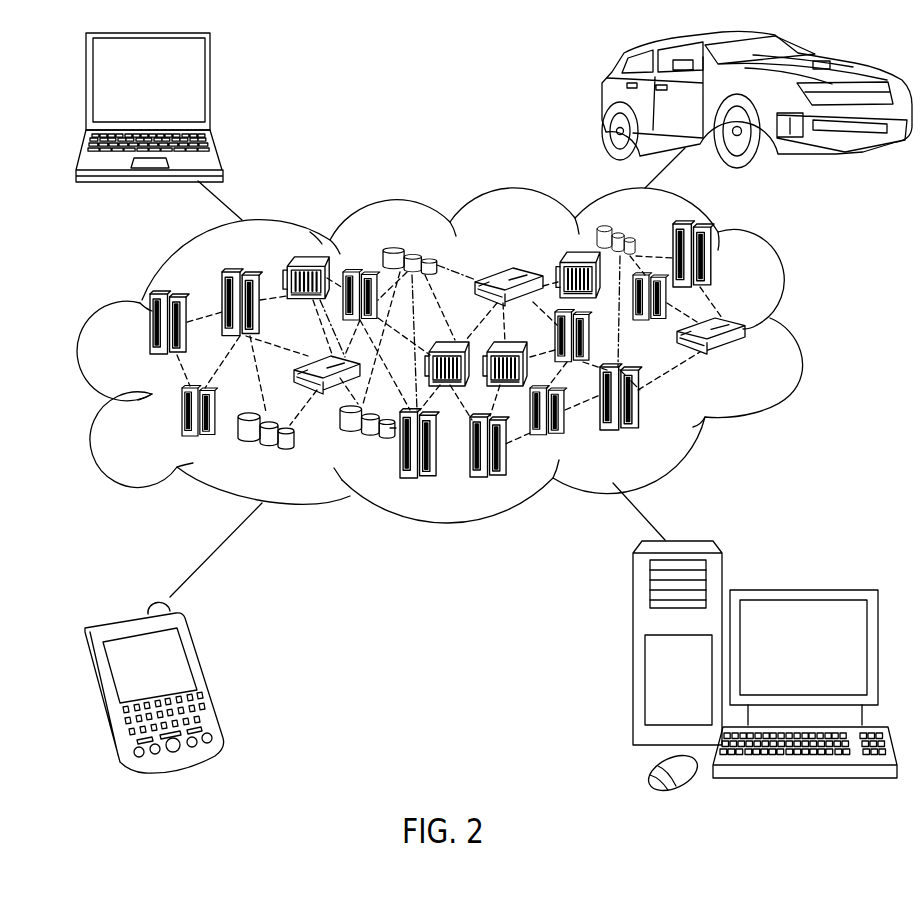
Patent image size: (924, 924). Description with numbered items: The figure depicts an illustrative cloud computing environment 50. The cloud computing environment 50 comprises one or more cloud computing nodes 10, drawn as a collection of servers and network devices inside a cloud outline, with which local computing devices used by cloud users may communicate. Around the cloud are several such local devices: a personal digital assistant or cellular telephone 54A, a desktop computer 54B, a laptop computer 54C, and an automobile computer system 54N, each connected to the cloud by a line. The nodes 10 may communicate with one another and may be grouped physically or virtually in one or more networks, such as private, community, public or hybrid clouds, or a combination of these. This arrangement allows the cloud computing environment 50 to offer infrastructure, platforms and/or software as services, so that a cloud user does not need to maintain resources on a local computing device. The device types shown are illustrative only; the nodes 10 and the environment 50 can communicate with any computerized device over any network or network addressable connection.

The cloud computing node 10 is at (748, 358).
The cloud computing environment 50 is at (799, 337).
The personal digital assistant or cellular telephone 54A is at (207, 678).
The desktop computer 54B is at (801, 590).
The laptop computer 54C is at (211, 88).
The automobile computer system 54N is at (603, 103).